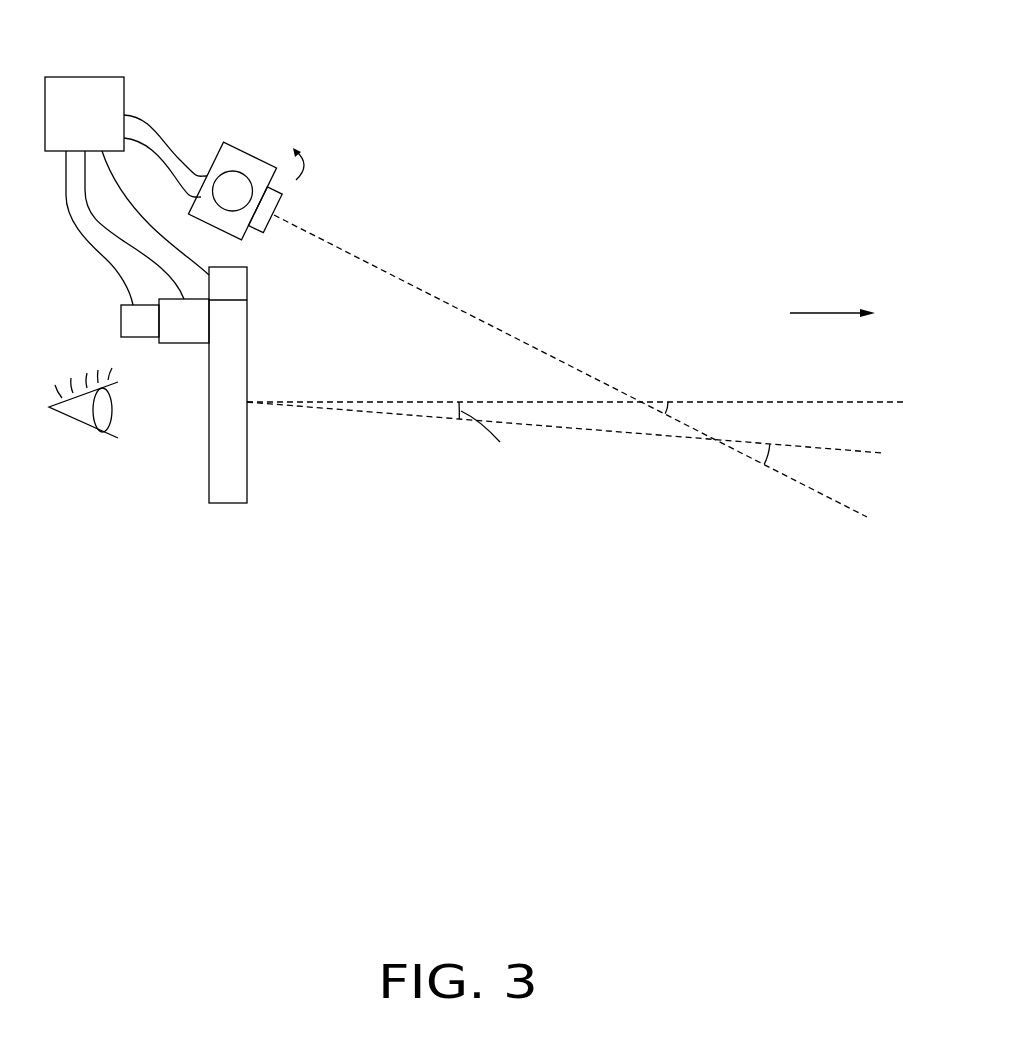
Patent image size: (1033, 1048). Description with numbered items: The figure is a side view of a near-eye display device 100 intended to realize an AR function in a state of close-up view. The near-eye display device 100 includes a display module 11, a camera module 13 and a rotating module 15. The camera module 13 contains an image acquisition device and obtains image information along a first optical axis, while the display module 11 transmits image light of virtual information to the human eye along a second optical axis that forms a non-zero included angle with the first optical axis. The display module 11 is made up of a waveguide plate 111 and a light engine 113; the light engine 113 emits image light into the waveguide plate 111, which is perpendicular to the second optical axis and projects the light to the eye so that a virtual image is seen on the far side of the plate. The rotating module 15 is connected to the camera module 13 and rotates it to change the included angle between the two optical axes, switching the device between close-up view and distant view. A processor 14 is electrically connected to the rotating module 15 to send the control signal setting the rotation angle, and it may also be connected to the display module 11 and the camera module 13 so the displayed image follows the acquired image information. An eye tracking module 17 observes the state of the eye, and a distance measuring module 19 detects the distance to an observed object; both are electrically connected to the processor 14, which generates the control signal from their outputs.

The near-eye display device 100 is at (523, 52).
The display module 11 is at (228, 437).
The waveguide plate 111 is at (227, 493).
The light engine 113 is at (187, 328).
The camera module 13 is at (221, 151).
The processor 14 is at (80, 90).
The rotating module 15 is at (240, 188).
The eye tracking module 17 is at (127, 320).
The distance measuring module 19 is at (230, 283).